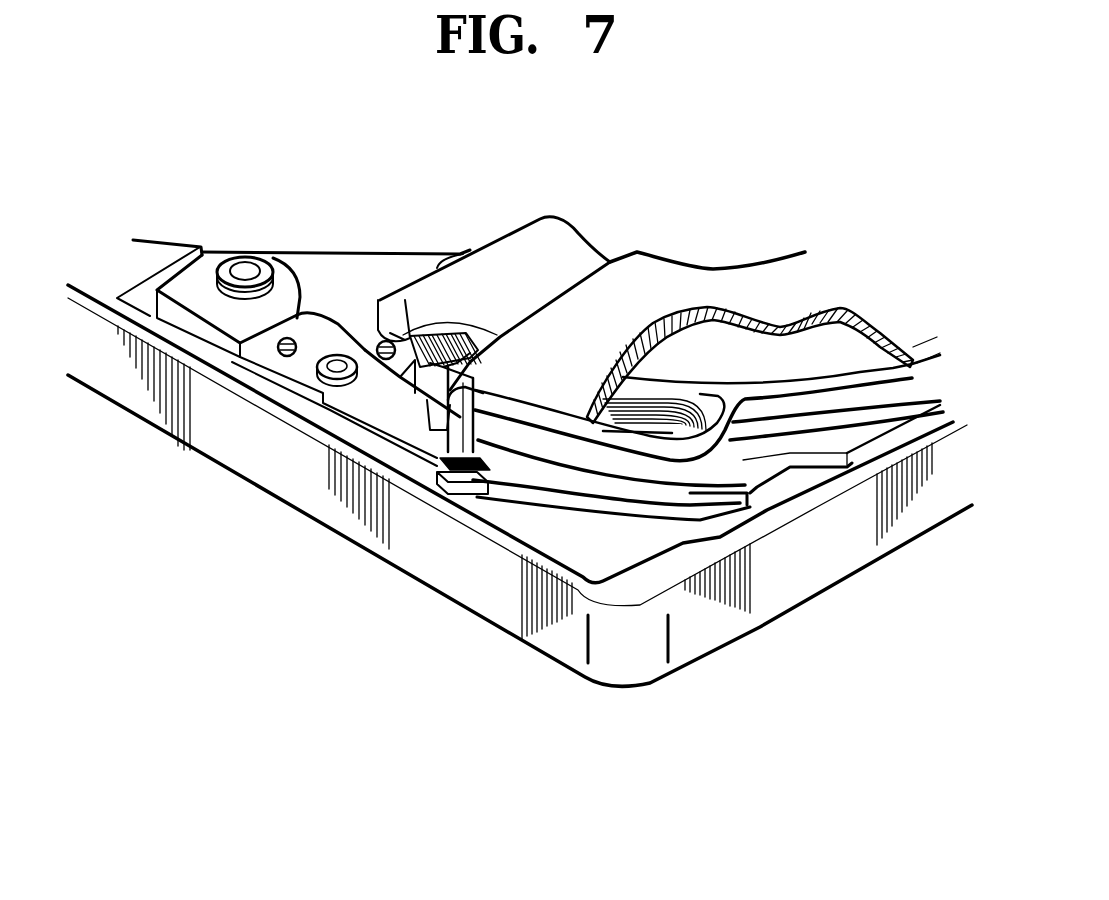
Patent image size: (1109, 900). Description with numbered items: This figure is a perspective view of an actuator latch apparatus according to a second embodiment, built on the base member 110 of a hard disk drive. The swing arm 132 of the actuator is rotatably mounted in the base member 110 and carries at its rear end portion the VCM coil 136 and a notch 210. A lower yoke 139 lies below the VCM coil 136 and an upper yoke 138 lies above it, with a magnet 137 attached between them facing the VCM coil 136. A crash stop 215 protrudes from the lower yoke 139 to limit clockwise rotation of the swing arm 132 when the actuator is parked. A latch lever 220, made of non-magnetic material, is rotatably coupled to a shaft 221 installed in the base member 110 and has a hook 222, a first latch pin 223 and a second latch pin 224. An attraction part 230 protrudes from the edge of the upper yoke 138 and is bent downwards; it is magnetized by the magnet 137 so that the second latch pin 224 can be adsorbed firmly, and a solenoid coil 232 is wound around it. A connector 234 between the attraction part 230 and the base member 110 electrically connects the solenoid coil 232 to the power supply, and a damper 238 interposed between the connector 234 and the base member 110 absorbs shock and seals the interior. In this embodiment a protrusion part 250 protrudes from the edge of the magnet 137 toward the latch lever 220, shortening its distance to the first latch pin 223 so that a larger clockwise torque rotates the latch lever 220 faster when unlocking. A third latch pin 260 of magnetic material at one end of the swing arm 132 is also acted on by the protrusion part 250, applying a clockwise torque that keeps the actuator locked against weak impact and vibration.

The base member 110 is at (648, 672).
The swing arm 132 is at (700, 500).
The VCM coil 136 is at (660, 413).
The magnet 137 is at (890, 377).
The upper yoke 138 is at (723, 277).
The lower yoke 139 is at (705, 455).
The notch 210 is at (385, 307).
The crash stop 215 is at (453, 252).
The latch lever 220 is at (327, 393).
The shaft 221 is at (337, 355).
The hook 222 is at (430, 407).
The first latch pin 223 is at (282, 357).
The second latch pin 224 is at (463, 417).
The attraction part 230 is at (487, 390).
The solenoid coil 232 is at (447, 490).
The connector 234 is at (473, 492).
The damper 238 is at (470, 495).
The protrusion part 250 is at (410, 336).
The third latch pin 260 is at (372, 325).